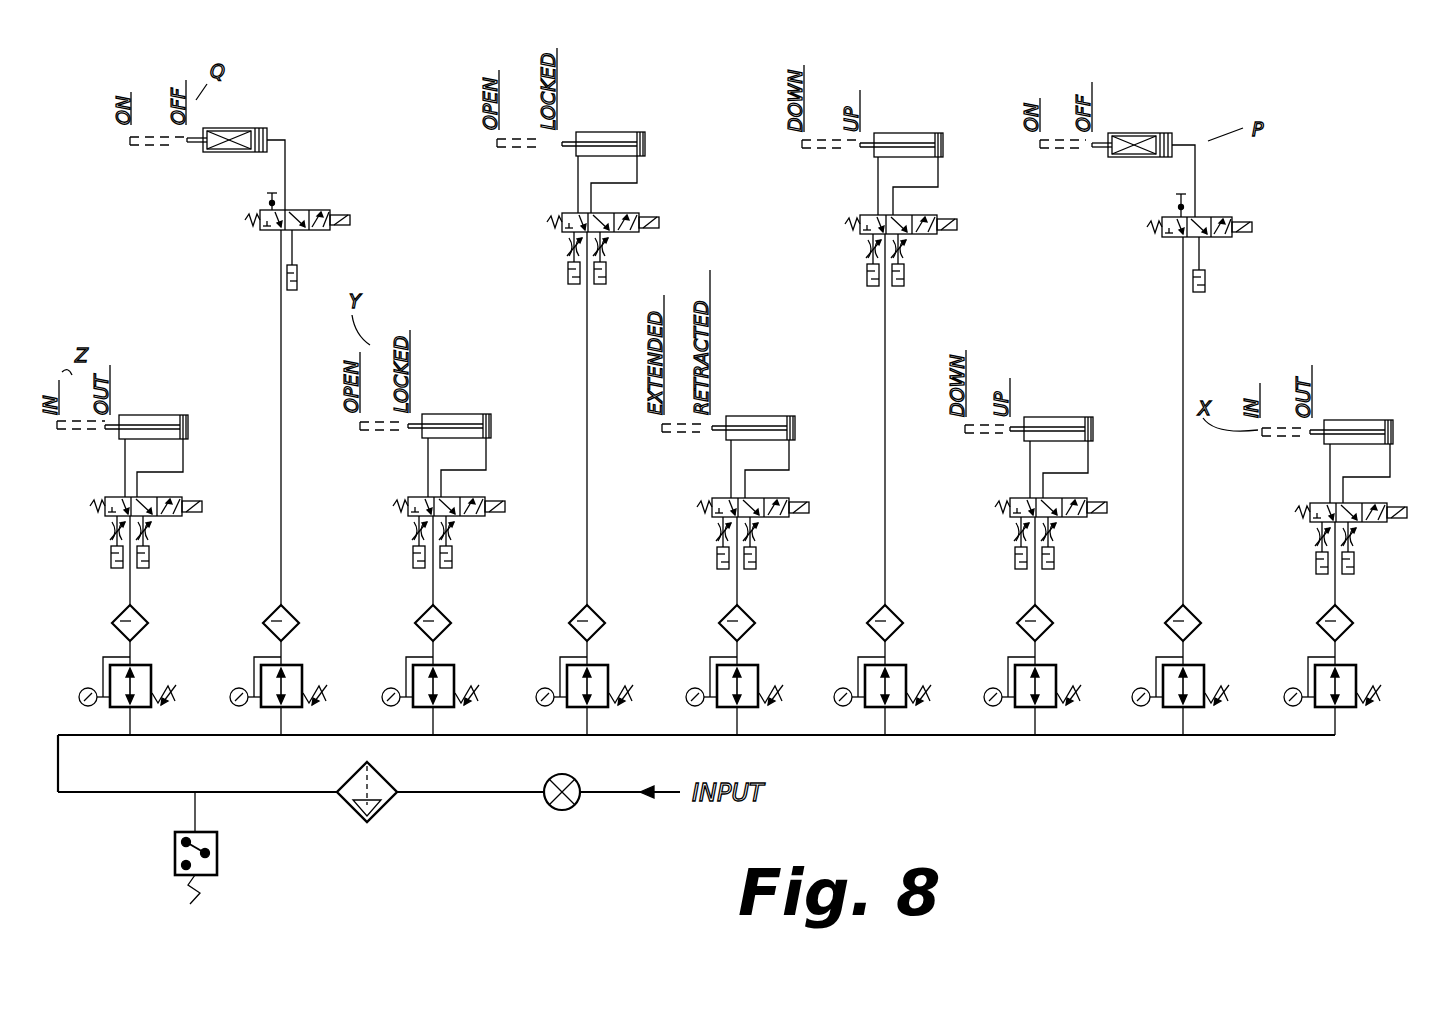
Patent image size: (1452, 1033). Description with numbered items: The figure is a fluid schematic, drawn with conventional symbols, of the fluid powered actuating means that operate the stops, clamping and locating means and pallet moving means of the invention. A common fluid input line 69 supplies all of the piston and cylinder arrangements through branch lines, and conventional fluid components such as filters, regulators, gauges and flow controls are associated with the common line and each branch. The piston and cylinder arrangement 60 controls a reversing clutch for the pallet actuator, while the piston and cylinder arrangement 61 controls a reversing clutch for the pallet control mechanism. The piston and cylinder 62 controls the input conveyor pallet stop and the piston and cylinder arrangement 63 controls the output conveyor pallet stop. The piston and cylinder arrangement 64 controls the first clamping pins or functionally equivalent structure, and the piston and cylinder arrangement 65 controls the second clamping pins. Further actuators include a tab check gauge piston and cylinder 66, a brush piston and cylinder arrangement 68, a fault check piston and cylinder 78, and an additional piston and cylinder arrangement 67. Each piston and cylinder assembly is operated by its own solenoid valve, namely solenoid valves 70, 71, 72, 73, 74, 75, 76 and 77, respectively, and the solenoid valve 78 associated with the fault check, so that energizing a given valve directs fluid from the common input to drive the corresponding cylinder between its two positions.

The piston and cylinder arrangement 60 is at (225, 128).
The piston and cylinder arrangement 61 is at (1138, 136).
The piston and cylinder 62 is at (151, 408).
The piston and cylinder arrangement 63 is at (1360, 413).
The piston and cylinder arrangement 64 is at (450, 414).
The piston and cylinder arrangement 65 is at (604, 132).
The tab check gauge piston and cylinder 66 is at (901, 133).
The up/down pneumatic cylinder 67 is at (1060, 417).
The brush piston and cylinder arrangement 68 is at (752, 416).
The common fluid input line 69 is at (586, 790).
The solenoid valve 70 is at (303, 208).
The solenoid valve 71 is at (1213, 213).
The solenoid valve 72 is at (168, 494).
The solenoid valve 73 is at (1385, 502).
The solenoid valve 74 is at (476, 498).
The solenoid valve 75 is at (620, 211).
The solenoid valve 76 is at (935, 214).
The solenoid valve 77 is at (1082, 500).
The fault check piston and cylinder 78 is at (782, 498).